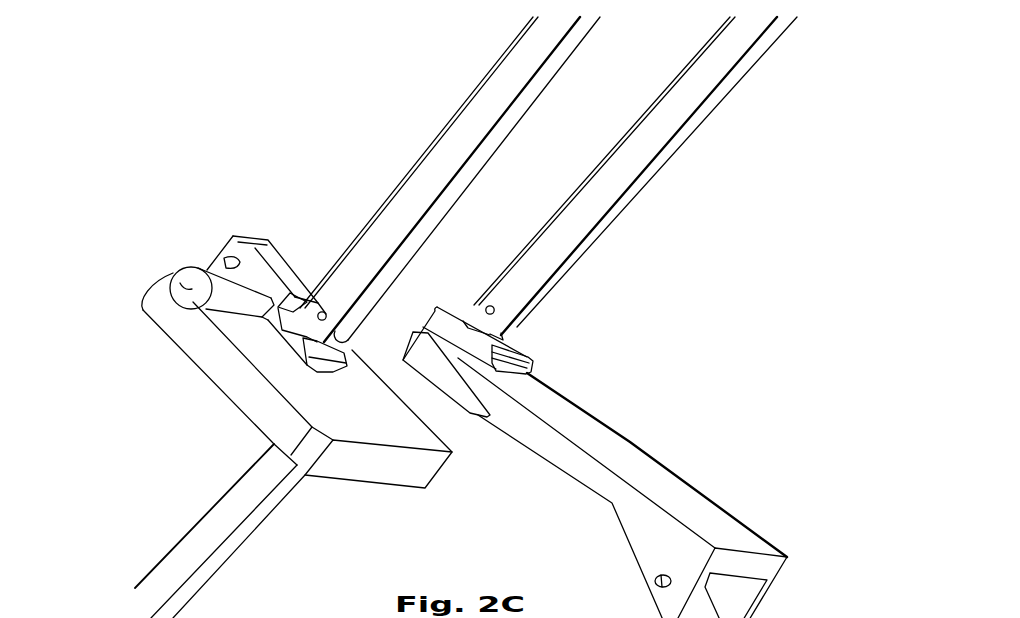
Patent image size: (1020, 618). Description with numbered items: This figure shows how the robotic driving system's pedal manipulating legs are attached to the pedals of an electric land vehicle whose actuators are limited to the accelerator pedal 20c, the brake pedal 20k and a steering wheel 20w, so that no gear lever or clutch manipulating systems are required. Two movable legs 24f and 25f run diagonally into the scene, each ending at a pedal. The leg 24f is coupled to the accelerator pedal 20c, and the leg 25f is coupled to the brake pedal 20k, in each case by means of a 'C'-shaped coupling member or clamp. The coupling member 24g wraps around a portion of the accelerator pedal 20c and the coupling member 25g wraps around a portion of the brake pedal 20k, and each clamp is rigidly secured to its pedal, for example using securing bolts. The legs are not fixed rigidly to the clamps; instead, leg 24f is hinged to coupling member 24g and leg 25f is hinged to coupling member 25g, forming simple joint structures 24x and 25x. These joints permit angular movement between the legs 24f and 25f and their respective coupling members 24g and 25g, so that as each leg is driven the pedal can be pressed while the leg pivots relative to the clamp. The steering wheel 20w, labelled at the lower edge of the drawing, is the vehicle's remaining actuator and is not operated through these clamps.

The movable leg 25f is at (397, 210).
The 'C'-shaped coupling member 25g is at (231, 236).
The joint structure 25x is at (344, 262).
The movable leg 24f is at (688, 133).
The 'C'-shaped coupling member 24g is at (527, 350).
The joint structure 24x is at (487, 303).
The accelerator pedal 20c is at (617, 436).
The brake pedal 20k is at (207, 363).
The steering wheel 20w is at (220, 531).